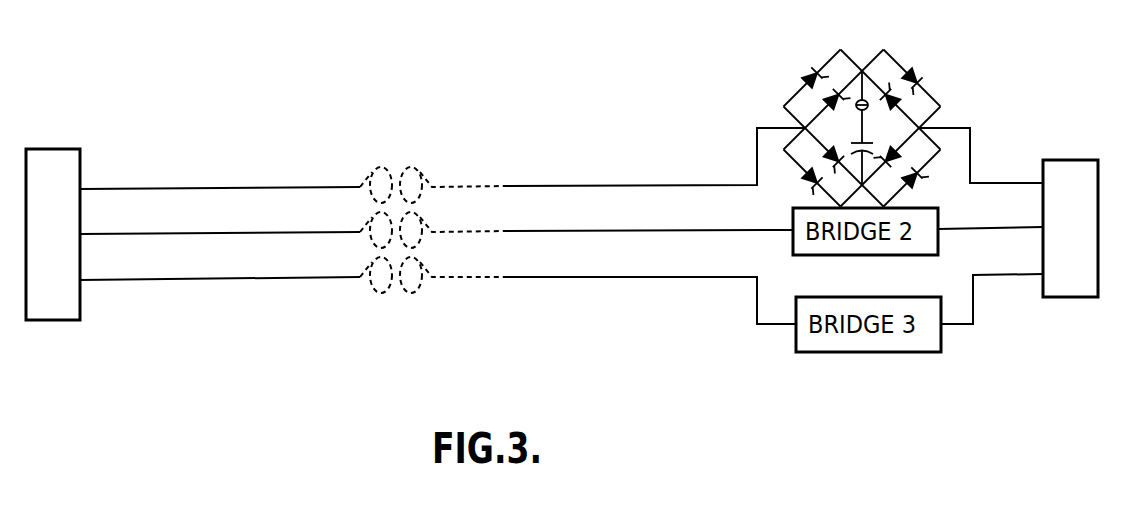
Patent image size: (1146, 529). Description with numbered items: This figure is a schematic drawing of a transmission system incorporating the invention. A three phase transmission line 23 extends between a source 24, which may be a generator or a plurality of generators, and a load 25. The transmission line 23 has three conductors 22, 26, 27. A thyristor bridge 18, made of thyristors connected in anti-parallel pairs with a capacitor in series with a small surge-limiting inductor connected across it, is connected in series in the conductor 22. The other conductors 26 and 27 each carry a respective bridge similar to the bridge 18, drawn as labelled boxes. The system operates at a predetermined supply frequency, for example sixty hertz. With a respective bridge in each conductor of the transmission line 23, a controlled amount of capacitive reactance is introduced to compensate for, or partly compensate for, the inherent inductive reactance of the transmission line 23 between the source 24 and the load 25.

The thyristor bridge 18 is at (866, 44).
The conductor 22 is at (550, 186).
The transmission line 23 is at (272, 170).
The source 24 is at (43, 150).
The load 25 is at (1048, 160).
The conductor 26 is at (550, 231).
The conductor 27 is at (550, 277).